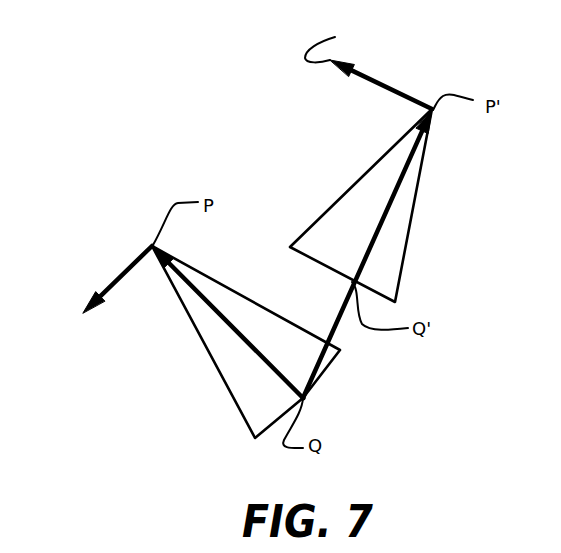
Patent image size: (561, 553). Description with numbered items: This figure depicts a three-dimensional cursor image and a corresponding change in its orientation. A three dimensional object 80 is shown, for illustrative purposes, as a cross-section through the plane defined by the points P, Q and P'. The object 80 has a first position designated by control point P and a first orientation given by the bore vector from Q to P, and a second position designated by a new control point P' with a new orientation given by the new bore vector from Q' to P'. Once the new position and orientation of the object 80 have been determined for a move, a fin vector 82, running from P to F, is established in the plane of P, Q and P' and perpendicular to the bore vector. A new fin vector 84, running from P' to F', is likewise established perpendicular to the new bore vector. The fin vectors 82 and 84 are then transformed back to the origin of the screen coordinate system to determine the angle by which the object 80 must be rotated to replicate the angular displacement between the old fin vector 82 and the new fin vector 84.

The three dimensional object 80 is at (207, 370).
The fin vector 82 is at (122, 270).
The new fin vector 84 is at (394, 57).